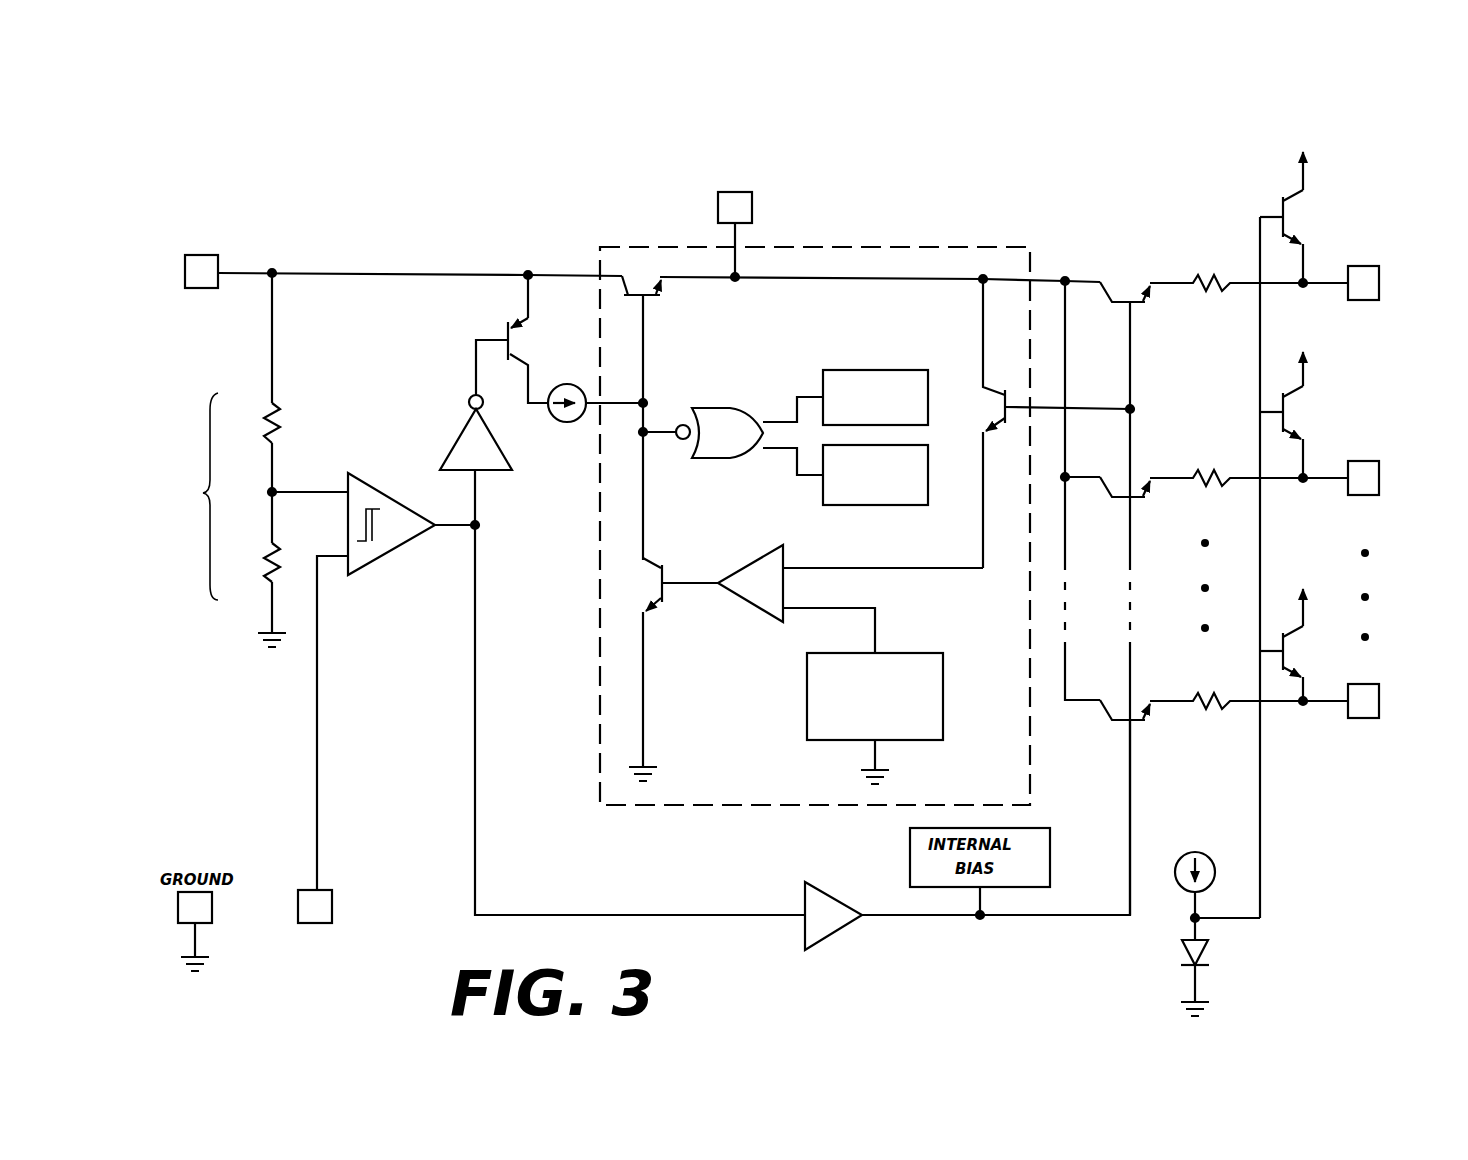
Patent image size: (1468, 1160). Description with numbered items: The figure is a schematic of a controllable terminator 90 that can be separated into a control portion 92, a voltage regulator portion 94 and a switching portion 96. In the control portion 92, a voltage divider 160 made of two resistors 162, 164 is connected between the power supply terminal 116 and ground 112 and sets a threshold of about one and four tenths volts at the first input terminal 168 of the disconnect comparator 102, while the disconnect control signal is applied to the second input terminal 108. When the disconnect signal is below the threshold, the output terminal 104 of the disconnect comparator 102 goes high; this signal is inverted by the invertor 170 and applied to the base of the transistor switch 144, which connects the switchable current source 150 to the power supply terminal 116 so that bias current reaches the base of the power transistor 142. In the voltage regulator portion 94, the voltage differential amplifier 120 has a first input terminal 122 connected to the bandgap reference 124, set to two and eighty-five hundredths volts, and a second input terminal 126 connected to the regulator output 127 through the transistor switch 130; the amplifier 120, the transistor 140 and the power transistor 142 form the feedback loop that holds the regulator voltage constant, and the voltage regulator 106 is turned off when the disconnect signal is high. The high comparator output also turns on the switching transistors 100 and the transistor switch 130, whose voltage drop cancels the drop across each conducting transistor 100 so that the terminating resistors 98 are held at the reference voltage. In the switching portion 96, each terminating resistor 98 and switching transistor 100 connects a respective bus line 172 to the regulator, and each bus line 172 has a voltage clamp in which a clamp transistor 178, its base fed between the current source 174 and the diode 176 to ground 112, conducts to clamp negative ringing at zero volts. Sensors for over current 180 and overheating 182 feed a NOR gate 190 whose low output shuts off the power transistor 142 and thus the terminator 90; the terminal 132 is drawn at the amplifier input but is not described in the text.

The controllable terminator 90 is at (1118, 185).
The control portion 92 is at (428, 218).
The voltage regulator portion 94 is at (902, 232).
The switching portion 96 is at (1190, 213).
The terminating resistors 98 is at (1218, 292).
The switching transistors 100 is at (1140, 305).
The disconnect comparator 102 is at (388, 462).
The output terminal 104 is at (432, 533).
The voltage regulator 106 is at (968, 248).
The second input terminal 108 is at (332, 548).
The ground 112 is at (255, 640).
The power supply terminal 116 is at (200, 280).
The voltage differential amplifier 120 is at (745, 615).
The first input terminal 122 is at (790, 606).
The bandgap reference 124 is at (900, 652).
The second input terminal 126 is at (790, 550).
The regulator output 127 is at (752, 215).
The transistor switch 130 is at (1010, 430).
The error amplifier non-inverting input 132 is at (690, 580).
The transistor 140 is at (655, 605).
The power transistor 142 is at (660, 300).
The transistor switch 144 is at (505, 328).
The switchable current source 150 is at (576, 384).
The voltage divider 160 is at (215, 496).
The resistor 162 is at (282, 418).
The resistor 164 is at (262, 572).
The first input terminal 168 is at (345, 480).
The invertor 170 is at (500, 460).
The bus line 172 is at (1366, 266).
The current source 174 is at (1183, 855).
The diode 176 is at (1180, 950).
The clamp transistor 178 is at (1308, 180).
The over current sensor 180 is at (900, 370).
The overheating sensor 182 is at (905, 505).
The NOR gate 190 is at (745, 444).